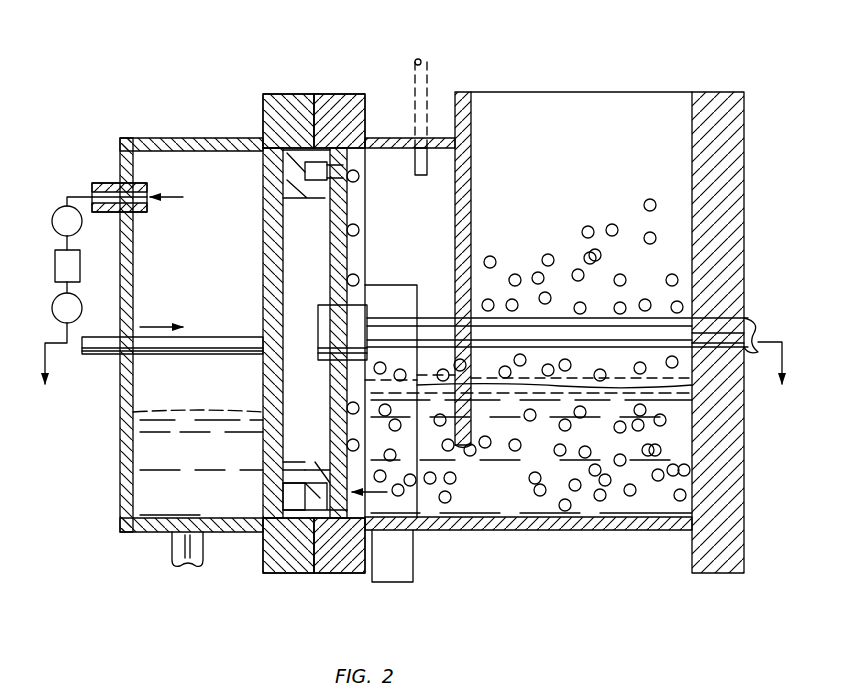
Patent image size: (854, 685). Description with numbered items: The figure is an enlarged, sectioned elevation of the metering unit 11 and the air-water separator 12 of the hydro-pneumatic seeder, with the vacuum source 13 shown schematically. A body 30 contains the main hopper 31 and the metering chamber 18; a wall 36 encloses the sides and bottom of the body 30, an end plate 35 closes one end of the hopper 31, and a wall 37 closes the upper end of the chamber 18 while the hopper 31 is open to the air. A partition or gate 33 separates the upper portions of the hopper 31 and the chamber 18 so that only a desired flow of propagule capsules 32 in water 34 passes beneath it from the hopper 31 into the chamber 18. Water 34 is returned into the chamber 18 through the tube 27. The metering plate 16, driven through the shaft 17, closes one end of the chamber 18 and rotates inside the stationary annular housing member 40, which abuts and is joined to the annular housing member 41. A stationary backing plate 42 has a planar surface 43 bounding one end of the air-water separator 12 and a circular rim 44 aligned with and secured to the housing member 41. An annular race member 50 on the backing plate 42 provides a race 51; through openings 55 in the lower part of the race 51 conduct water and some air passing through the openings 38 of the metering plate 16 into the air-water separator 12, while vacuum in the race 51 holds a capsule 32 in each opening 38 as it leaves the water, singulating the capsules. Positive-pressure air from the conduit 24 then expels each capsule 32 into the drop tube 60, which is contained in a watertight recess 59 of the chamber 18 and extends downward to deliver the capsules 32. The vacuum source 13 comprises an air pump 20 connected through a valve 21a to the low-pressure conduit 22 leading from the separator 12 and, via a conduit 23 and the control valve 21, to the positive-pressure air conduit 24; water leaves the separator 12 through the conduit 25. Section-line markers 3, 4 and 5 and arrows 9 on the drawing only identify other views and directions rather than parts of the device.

The section line 3 is at (333, 86).
The section line 4 is at (330, 56).
The section line 5 is at (395, 116).
The flow direction arrows 9 is at (412, 366).
The metering unit 11 is at (682, 82).
The air-water separator 12 is at (184, 120).
The vacuum source 13 is at (90, 178).
The metering plate 16 is at (365, 218).
The shaft 17 is at (563, 325).
The metering chamber 18 is at (419, 281).
The air pump 20 is at (80, 262).
The control valve 21 is at (83, 310).
The valve 21a is at (67, 197).
The low-pressure or vacuum conduit 22 is at (135, 184).
The conduit 23 is at (70, 290).
The positive-pressure air conduit 24 is at (236, 337).
The conduit 25 is at (175, 545).
The tube 27 is at (428, 62).
The body 30 is at (522, 76).
The main hopper 31 is at (580, 169).
The propagule capsules 32 is at (360, 176).
The partition or gate 33 is at (471, 418).
The water 34 is at (607, 503).
The end plate 35 is at (692, 262).
The wall 36 is at (548, 530).
The wall 37 is at (436, 137).
The openings 38 is at (348, 190).
The annular housing member 40 is at (323, 98).
The annular housing member 41 is at (283, 120).
The backing plate 42 is at (263, 243).
The planar surface 43 is at (263, 376).
The circular rim 44 is at (283, 160).
The annular race member 50 is at (275, 185).
The race 51 is at (320, 198).
The through openings 55 is at (283, 492).
The watertight recess 59 is at (403, 310).
The drop tube 60 is at (413, 560).